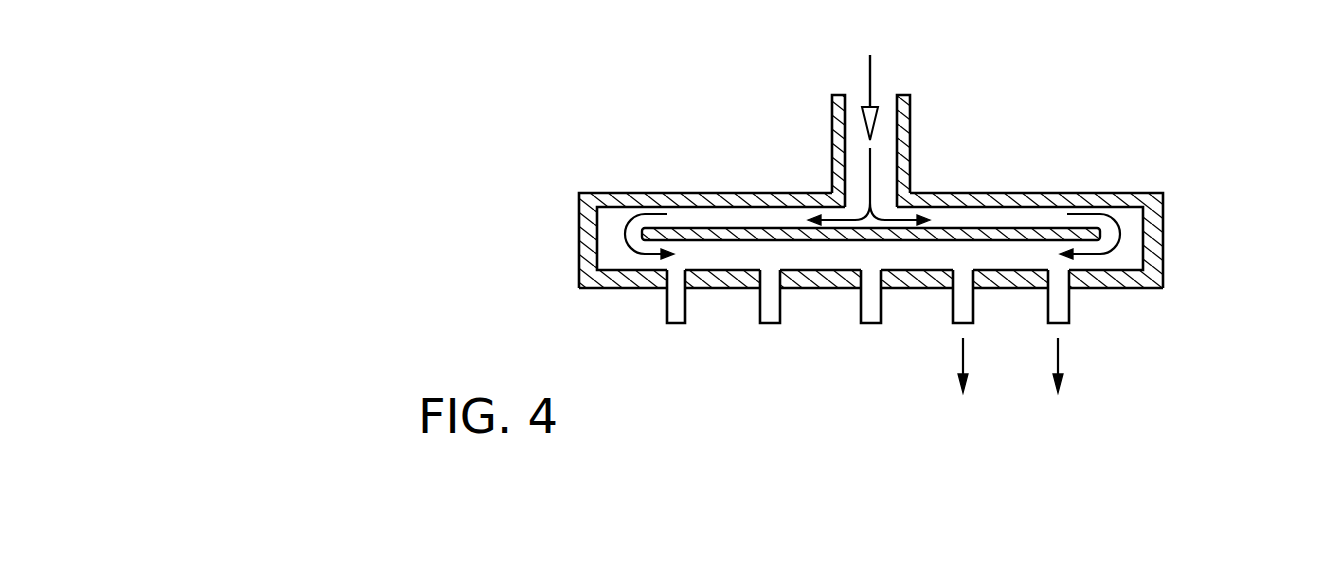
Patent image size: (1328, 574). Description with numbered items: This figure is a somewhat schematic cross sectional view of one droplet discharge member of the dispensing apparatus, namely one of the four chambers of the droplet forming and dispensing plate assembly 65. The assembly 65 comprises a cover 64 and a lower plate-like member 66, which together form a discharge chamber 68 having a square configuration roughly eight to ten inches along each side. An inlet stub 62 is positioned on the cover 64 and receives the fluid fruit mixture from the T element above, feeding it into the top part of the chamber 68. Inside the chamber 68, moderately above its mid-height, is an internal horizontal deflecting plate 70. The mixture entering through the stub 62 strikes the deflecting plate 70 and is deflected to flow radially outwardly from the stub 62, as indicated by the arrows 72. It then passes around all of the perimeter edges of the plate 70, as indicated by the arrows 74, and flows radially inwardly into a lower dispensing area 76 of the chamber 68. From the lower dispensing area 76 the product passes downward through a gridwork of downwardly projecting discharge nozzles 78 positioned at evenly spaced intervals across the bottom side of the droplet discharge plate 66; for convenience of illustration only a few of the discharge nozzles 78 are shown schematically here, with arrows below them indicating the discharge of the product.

The inlet stub 62 is at (912, 122).
The cover 64 is at (1097, 194).
The droplet forming and dispensing plate assembly 65 is at (1185, 217).
The lower plate-like member 66 is at (1125, 289).
The discharge chamber 68 is at (993, 198).
The deflecting plate 70 is at (733, 226).
The arrows 72 is at (911, 192).
The arrows 74 is at (620, 236).
The lower dispensing area 76 is at (823, 256).
The discharge nozzles 78 is at (672, 324).